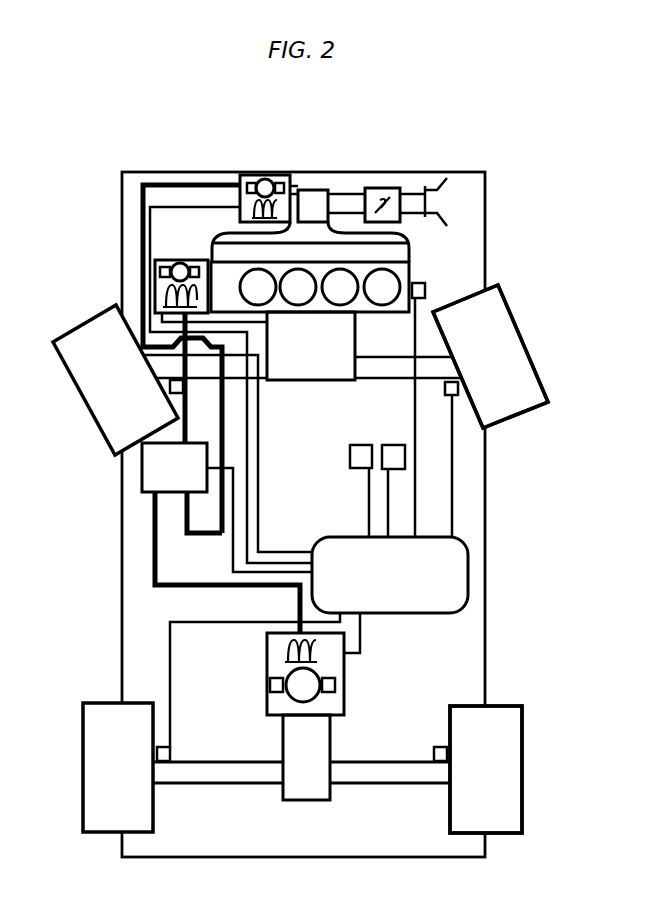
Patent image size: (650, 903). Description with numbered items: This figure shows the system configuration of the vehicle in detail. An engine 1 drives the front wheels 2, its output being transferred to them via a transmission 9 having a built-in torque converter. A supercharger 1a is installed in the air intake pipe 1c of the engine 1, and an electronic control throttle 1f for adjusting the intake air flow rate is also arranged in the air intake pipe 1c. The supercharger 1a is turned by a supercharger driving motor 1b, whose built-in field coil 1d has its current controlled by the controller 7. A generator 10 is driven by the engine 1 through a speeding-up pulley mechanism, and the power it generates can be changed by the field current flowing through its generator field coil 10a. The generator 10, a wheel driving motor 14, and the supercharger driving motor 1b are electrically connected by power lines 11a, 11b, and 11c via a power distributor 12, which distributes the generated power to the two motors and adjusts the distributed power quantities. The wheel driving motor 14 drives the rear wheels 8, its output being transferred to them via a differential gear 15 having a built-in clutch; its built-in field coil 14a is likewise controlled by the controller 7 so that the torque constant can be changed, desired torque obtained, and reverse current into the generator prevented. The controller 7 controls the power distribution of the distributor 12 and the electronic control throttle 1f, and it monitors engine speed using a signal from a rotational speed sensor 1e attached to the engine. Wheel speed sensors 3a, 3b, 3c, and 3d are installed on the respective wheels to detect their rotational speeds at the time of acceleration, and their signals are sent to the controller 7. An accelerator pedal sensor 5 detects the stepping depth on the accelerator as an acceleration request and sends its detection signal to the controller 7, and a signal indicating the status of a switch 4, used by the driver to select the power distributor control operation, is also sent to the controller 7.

The engine 1 is at (409, 262).
The supercharger 1a is at (310, 190).
The supercharger driving motor 1b is at (265, 177).
The air intake pipe 1c is at (347, 192).
The field coil 1d is at (243, 180).
The rotational speed sensor 1e is at (426, 290).
The electronic control throttle 1f is at (406, 189).
The front wheels 2 is at (527, 335).
The wheel speed sensor 3a is at (467, 383).
The wheel speed sensor 3b is at (450, 753).
The wheel speed sensor 3c is at (147, 372).
The wheel speed sensor 3d is at (153, 752).
The switch 4 is at (368, 444).
The accelerator pedal sensor 5 is at (404, 460).
The controller 7 is at (468, 565).
The rear wheels 8 is at (523, 718).
The transmission 9 is at (267, 330).
The generator 10 is at (153, 258).
The generator field coil 10a is at (162, 292).
The power line 11a is at (178, 418).
The power line 11b is at (187, 515).
The power line 11c is at (155, 548).
The power distributor 12 is at (142, 467).
The wheel driving motor 14 is at (347, 672).
The field coil 14a is at (287, 642).
The differential gear 15 is at (330, 727).